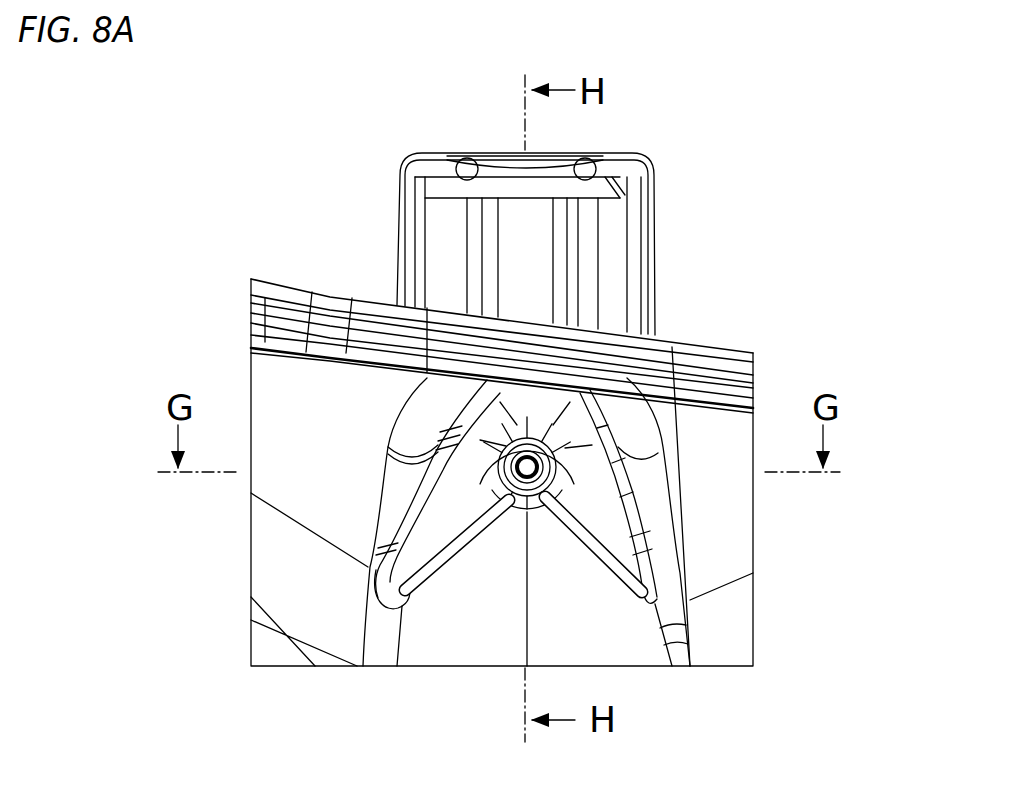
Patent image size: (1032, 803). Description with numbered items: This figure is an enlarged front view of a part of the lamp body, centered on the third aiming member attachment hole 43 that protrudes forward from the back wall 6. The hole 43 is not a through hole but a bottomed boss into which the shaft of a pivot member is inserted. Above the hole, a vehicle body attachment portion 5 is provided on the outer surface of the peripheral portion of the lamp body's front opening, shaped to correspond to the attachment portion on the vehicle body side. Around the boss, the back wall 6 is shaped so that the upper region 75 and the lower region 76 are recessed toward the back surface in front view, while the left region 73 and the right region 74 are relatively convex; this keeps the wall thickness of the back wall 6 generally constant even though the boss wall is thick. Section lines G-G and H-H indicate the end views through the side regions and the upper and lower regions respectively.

The vehicle body attachment portion 5 is at (615, 250).
The back wall 6 is at (735, 612).
The third aiming member attachment hole 43 is at (556, 468).
The left region 73 is at (510, 542).
The right region 74 is at (596, 494).
The upper region 75 is at (548, 414).
The lower region 76 is at (475, 478).